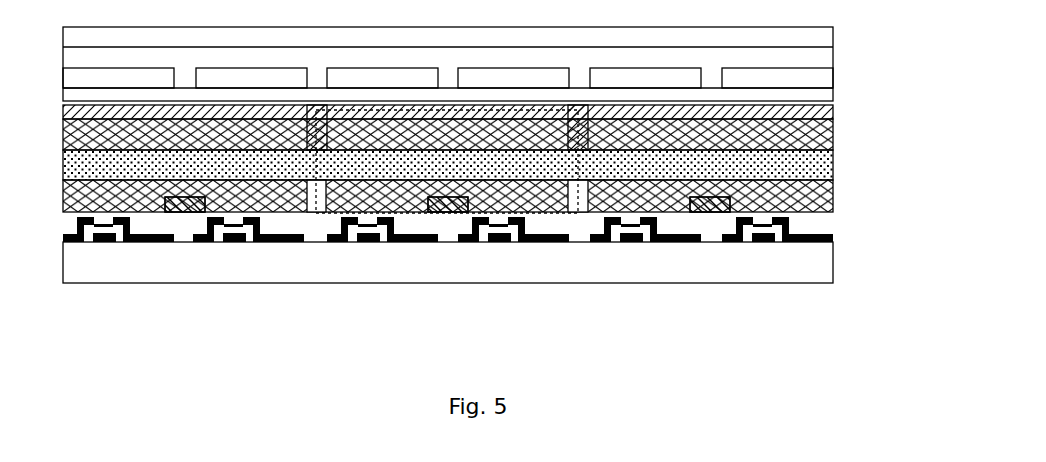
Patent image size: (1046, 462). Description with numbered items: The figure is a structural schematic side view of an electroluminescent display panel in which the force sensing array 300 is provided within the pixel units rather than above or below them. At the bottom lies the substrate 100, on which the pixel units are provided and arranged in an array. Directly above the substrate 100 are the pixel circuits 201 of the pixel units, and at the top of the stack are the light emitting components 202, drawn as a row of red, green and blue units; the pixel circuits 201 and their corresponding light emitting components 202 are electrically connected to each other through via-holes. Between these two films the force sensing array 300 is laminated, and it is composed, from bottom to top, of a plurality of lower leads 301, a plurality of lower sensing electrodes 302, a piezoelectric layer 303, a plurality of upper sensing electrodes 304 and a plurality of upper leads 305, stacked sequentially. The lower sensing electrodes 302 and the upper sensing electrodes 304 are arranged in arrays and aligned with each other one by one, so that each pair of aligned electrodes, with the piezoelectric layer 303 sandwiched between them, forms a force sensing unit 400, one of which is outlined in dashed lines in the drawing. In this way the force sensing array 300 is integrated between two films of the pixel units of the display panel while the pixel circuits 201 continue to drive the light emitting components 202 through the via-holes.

The substrate 100 is at (812, 267).
The pixel circuits 201 is at (837, 212).
The light emitting components 202 is at (838, 33).
The force sensing array 300 is at (500, 160).
The lower leads 301 is at (723, 200).
The lower sensing electrodes 302 is at (815, 189).
The piezoelectric layer 303 is at (813, 165).
The upper sensing electrodes 304 is at (813, 138).
The upper leads 305 is at (478, 126).
The force sensing unit 400 is at (433, 213).